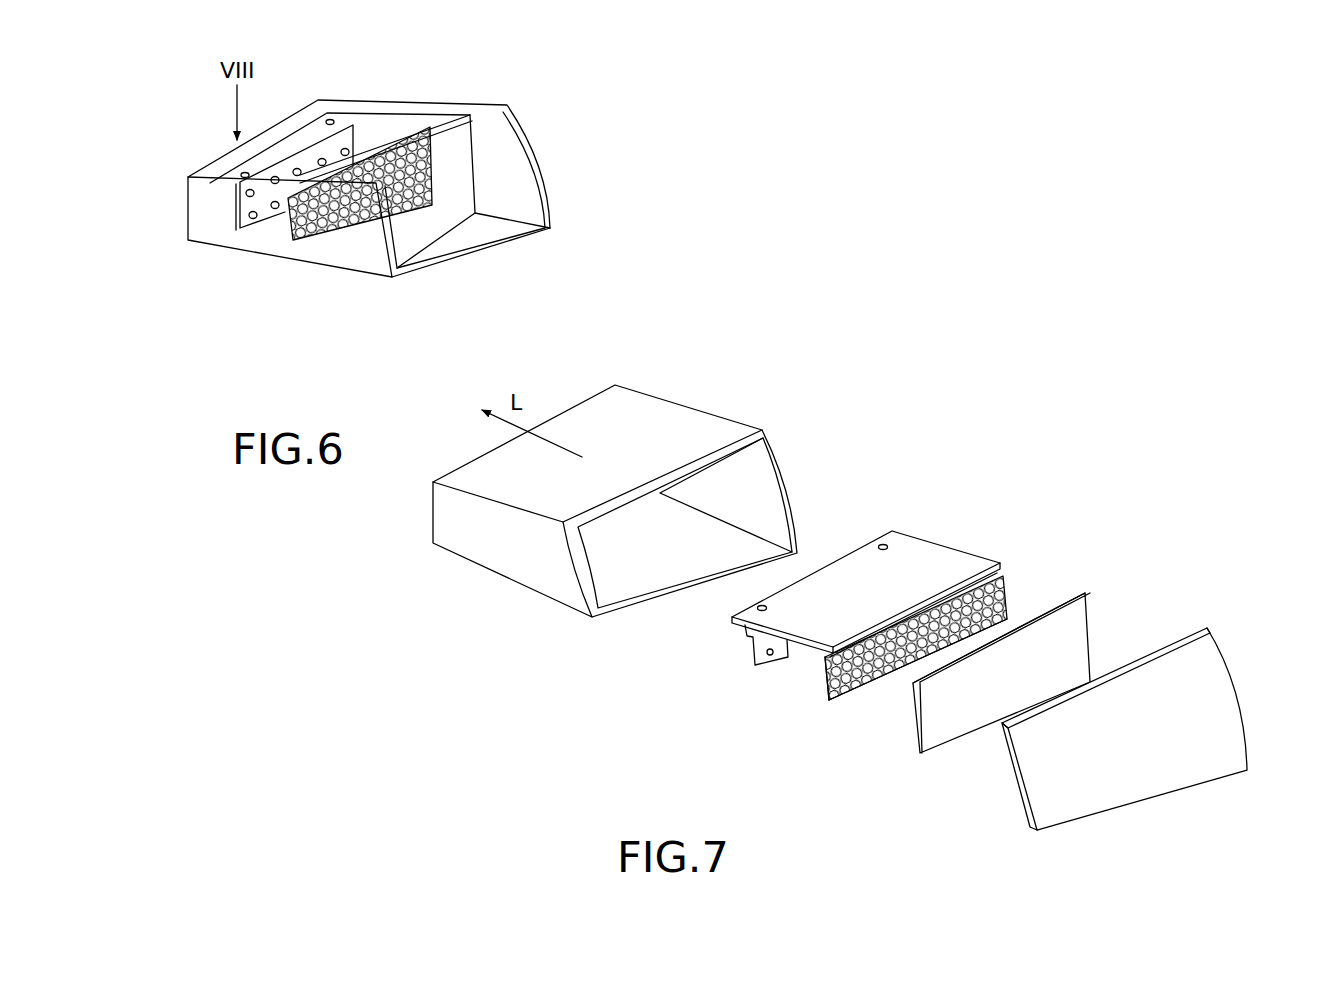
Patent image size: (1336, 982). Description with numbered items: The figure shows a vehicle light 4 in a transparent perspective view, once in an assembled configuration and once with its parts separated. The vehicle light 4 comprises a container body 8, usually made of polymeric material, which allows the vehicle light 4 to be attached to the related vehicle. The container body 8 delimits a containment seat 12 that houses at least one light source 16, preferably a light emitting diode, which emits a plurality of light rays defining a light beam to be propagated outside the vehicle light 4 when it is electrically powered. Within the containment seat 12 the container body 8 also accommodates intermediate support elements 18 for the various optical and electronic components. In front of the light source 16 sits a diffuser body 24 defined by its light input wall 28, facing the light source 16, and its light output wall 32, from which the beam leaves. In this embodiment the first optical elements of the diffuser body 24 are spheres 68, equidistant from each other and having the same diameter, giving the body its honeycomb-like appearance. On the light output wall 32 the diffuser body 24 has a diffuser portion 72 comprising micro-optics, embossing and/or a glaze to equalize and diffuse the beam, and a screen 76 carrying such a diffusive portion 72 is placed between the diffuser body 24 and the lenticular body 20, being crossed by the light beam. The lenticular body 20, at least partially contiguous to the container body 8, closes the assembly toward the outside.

In FIG. 6, the vehicle light 4 is at (592, 148).
In FIG. 7, the vehicle light 4 is at (873, 432).
In FIG. 6, the container body 8 is at (275, 247).
In FIG. 7, the container body 8 is at (675, 423).
In FIG. 7, the containment seat 12 is at (612, 565).
In FIG. 6, the light source 16 is at (235, 226).
In FIG. 7, the light source 16 is at (755, 667).
In FIG. 7, the intermediate support elements 18 is at (923, 563).
In FIG. 7, the lenticular body 20 is at (1215, 700).
In FIG. 6, the diffuser body 24 is at (305, 248).
In FIG. 7, the diffuser body 24 is at (832, 707).
In FIG. 7, the light input wall 28 is at (818, 682).
In FIG. 7, the light output wall 32 is at (878, 705).
In FIG. 7, the spheres 68 is at (1007, 592).
In FIG. 7, the diffuser portion 72 is at (1067, 638).
In FIG. 7, the screen 76 is at (999, 638).